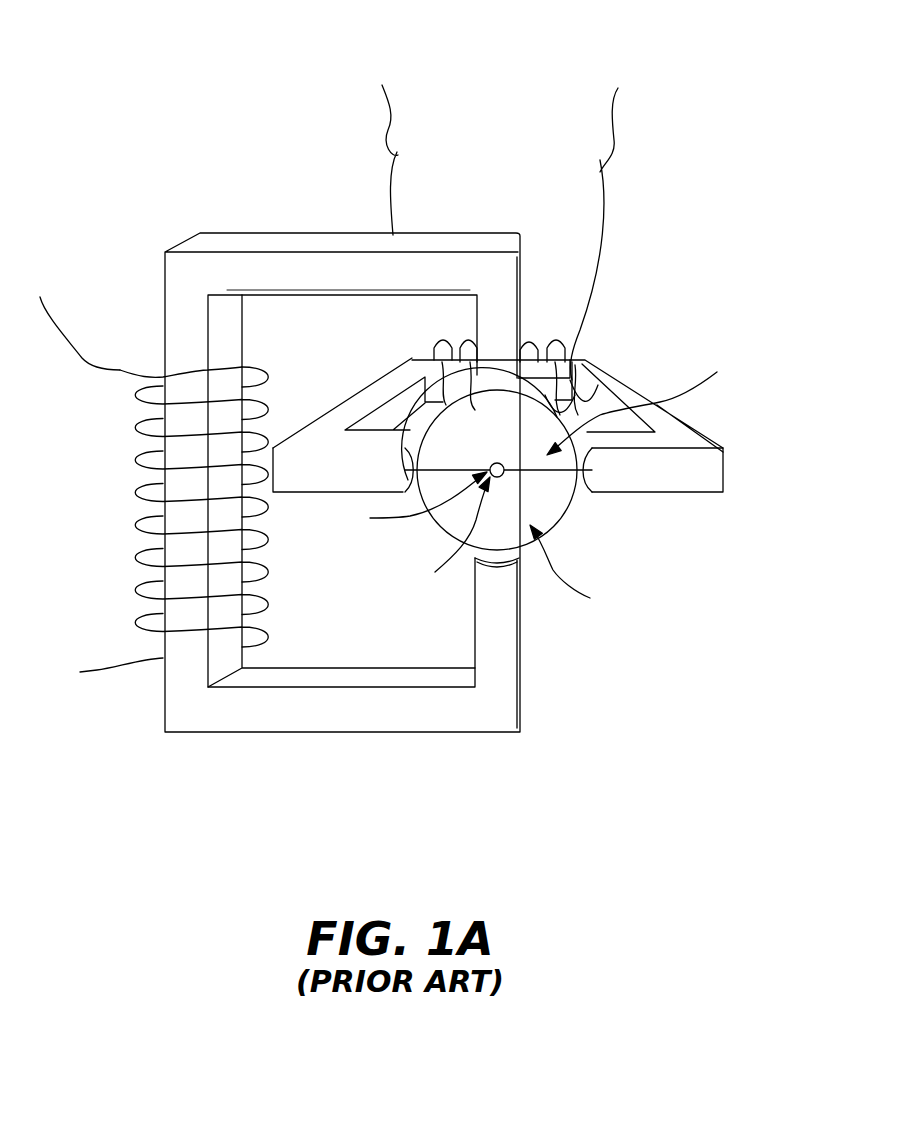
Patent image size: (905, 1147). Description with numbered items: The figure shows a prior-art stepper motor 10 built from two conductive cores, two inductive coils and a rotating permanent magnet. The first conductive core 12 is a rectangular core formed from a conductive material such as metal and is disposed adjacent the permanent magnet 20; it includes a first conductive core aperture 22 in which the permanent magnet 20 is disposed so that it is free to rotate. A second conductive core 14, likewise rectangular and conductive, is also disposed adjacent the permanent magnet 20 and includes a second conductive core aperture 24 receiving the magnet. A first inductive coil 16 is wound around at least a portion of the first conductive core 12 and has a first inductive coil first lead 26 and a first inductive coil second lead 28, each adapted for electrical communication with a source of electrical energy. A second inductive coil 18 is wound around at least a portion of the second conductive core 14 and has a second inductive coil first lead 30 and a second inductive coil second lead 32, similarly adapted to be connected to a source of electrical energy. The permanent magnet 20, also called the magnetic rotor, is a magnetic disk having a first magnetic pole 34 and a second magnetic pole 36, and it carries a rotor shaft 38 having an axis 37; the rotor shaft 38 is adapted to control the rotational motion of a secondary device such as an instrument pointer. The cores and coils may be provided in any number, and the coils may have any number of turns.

The stepper motor 10 is at (190, 90).
The first conductive core 12 is at (183, 247).
The second conductive core 14 is at (727, 470).
The first inductive coil 16 is at (135, 500).
The second inductive coil 18 is at (600, 377).
The permanent magnet 20 is at (542, 490).
The first conductive core aperture 22 is at (520, 560).
The second conductive core aperture 24 is at (587, 493).
The first inductive coil first lead 26 is at (71, 321).
The first inductive coil second lead 28 is at (97, 670).
The second inductive coil first lead 30 is at (382, 150).
The second inductive coil second lead 32 is at (601, 222).
The first magnetic pole 34 is at (572, 566).
The second magnetic pole 36 is at (644, 406).
The axis 37 is at (414, 500).
The rotor shaft 38 is at (448, 532).